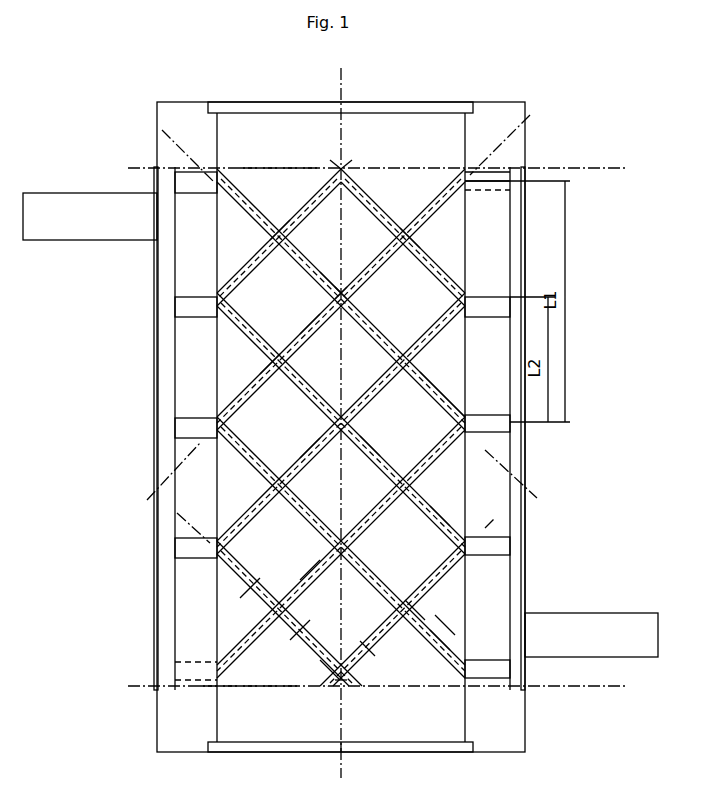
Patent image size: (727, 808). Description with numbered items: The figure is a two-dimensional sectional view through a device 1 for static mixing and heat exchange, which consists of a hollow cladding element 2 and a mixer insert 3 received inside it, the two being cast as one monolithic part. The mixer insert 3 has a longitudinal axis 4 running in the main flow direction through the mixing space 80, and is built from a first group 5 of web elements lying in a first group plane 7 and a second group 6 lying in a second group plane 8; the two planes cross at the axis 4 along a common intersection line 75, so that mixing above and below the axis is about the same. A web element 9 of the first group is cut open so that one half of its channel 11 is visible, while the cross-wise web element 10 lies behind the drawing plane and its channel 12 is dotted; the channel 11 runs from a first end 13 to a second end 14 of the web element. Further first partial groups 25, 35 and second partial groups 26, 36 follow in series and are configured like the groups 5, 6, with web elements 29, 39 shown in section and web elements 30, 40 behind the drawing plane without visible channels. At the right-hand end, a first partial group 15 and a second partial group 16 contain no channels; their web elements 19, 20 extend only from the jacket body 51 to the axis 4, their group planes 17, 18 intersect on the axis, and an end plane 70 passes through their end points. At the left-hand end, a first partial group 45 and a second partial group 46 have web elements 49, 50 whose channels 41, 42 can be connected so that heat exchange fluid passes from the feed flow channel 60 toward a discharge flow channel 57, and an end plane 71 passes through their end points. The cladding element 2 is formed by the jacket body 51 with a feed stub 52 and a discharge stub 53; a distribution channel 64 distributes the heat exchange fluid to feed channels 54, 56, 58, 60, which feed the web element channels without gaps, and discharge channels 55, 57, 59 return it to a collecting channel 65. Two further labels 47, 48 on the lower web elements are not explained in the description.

The device for static mixing and heat exchange 1 is at (83, 543).
The cladding element 2 is at (158, 703).
The mixer insert 3 is at (327, 691).
The longitudinal axis 4 is at (341, 752).
The first group of web elements 5 is at (383, 350).
The second group of web elements 6 is at (298, 334).
The first common group plane 7 is at (147, 124).
The second common group plane 8 is at (532, 117).
The web element of the first group 9 is at (245, 238).
The web element of the second group 10 is at (424, 212).
The channel 11 is at (310, 290).
The channel 12 is at (443, 196).
The first end of the web element 13 is at (445, 428).
The second end of the web element 14 is at (216, 166).
The first partial group 15 is at (341, 228).
The second partial group 16 is at (302, 210).
The first group plane 17 is at (306, 154).
The second group plane 18 is at (378, 156).
The web element 19 is at (428, 283).
The web element 20 is at (319, 196).
The first partial group 25 is at (368, 472).
The second partial group 26 is at (312, 445).
The web element 29 is at (423, 520).
The web element 30 is at (415, 341).
The first partial group 35 is at (369, 586).
The second partial group 36 is at (313, 566).
The web element 39 is at (431, 645).
The web element 40 is at (418, 466).
The channel 41 is at (260, 608).
The channel 42 is at (360, 643).
The first partial group 45 is at (298, 648).
The second partial group 46 is at (438, 566).
The bar 47 is at (252, 592).
The bar 48 is at (378, 614).
The web element 49 is at (323, 667).
The web element 50 is at (418, 588).
The jacket body 51 is at (500, 735).
The feed stub 52 is at (48, 222).
The discharge stub 53 is at (633, 650).
The feed channel 54 is at (190, 180).
The discharge channel 55 is at (488, 432).
The feed channel 56 is at (180, 305).
The discharge flow channel 57 is at (493, 545).
The feed channel 58 is at (180, 428).
The discharge channel 59 is at (492, 667).
The feed flow channel 60 is at (180, 548).
The distribution channel 64 is at (172, 622).
The collecting channel 65 is at (513, 505).
The end plane 70 is at (270, 168).
The end plane 71 is at (272, 688).
The intersection line 75 is at (341, 292).
The mixing space 80 is at (341, 704).